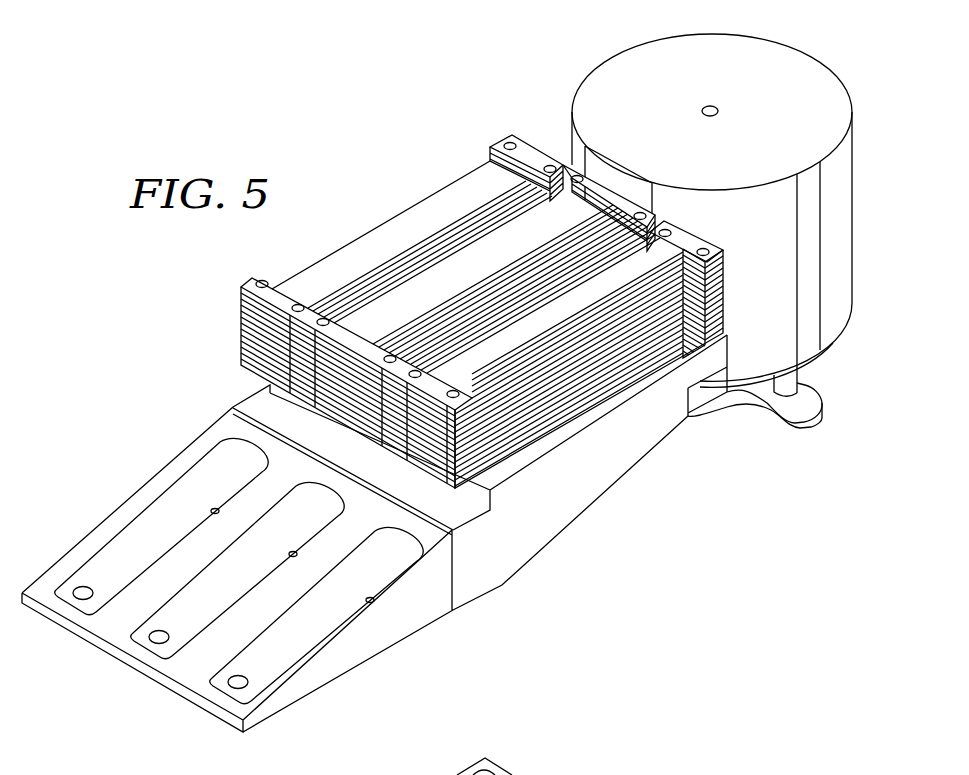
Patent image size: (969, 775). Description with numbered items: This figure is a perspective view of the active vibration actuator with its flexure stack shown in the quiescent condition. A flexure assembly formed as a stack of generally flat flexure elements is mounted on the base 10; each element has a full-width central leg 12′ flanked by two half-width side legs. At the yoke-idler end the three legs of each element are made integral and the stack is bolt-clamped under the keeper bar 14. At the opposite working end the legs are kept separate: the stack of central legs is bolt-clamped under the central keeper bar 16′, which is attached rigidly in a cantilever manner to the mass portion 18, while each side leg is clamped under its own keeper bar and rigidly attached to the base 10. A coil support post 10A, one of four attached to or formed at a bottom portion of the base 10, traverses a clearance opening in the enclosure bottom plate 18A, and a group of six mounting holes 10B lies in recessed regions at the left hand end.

The base 10 is at (572, 499).
The coil support post 10A is at (772, 392).
The mounting holes 10B is at (235, 684).
The full-width central leg 12′ is at (497, 289).
The keeper bar 14 is at (279, 295).
The central keeper bar 16′ is at (608, 200).
The mass portion 18 is at (775, 104).
The enclosure bottom plate 18A is at (827, 347).